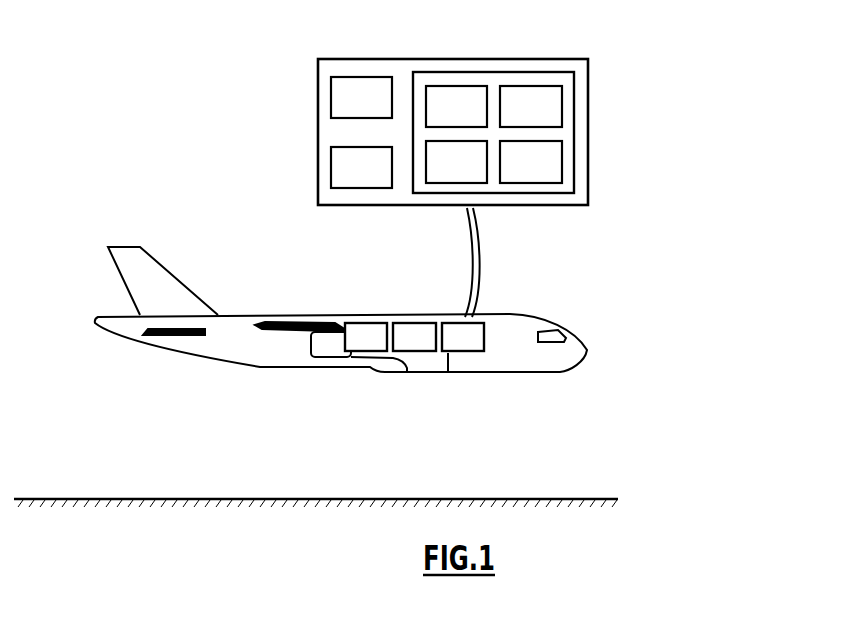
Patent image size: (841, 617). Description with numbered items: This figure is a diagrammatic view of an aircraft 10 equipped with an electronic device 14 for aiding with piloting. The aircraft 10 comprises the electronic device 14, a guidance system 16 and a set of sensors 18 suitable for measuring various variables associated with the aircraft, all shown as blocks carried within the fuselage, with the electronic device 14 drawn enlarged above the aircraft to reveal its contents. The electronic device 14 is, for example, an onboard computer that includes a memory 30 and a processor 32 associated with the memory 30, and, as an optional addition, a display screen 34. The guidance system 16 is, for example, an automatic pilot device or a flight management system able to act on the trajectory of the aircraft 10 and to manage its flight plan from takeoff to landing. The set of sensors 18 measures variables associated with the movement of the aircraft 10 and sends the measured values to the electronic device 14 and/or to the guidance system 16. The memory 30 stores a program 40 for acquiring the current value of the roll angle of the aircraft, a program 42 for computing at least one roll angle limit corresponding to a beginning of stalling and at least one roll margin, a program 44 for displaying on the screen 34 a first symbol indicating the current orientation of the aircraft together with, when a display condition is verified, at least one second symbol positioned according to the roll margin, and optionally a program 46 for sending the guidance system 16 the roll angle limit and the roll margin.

The aircraft 10 is at (281, 302).
The electronic device for aiding with piloting 14 is at (550, 184).
The guidance system 16 is at (413, 333).
The set of sensors 18 is at (369, 333).
The memory 30 is at (493, 105).
The processor 32 is at (361, 97).
The display screen 34 is at (361, 167).
The program for acquiring a current value of the roll angle 40 is at (456, 106).
The program for computing a roll angle limit and a roll margin 42 is at (531, 106).
The program for displaying 44 is at (456, 162).
The program for sending 46 is at (531, 162).